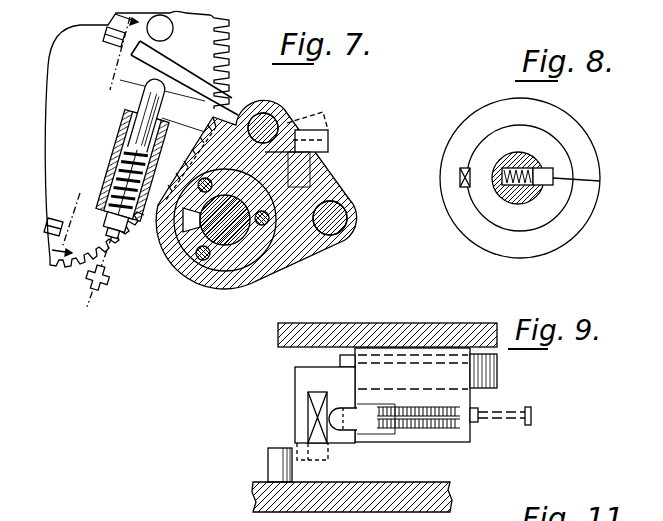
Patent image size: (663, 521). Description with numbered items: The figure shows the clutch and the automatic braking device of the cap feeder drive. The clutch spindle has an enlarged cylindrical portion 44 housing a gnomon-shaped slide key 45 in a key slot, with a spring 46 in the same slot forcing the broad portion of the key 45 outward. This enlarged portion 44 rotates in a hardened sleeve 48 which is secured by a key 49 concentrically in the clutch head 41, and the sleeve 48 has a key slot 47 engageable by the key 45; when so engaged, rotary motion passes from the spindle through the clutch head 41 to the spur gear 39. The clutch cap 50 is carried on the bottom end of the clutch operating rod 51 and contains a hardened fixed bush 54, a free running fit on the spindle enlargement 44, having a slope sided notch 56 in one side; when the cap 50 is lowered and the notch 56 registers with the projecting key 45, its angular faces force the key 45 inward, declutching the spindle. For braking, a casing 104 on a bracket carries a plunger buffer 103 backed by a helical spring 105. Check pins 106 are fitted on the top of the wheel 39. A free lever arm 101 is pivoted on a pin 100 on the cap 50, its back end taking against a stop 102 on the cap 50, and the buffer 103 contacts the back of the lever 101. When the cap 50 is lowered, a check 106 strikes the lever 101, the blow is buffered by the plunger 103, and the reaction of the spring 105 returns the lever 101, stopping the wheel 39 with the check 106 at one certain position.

In FIG. 7, the spur gear 39 is at (229, 46).
In FIG. 9, the spur gear 39 is at (400, 484).
In FIG. 8, the clutch head 41 is at (589, 161).
In FIG. 7, the enlarged cylindrical portion 44 is at (276, 248).
In FIG. 8, the enlarged cylindrical portion 44 is at (498, 198).
In FIG. 8, the slide key 45 is at (548, 168).
In FIG. 8, the spring 46 is at (504, 167).
In FIG. 8, the key slot 47 is at (588, 188).
In FIG. 8, the hardened sleeve 48 is at (518, 189).
In FIG. 8, the key 49 is at (460, 180).
In FIG. 7, the clutch cap 50 is at (336, 191).
In FIG. 9, the clutch cap 50 is at (498, 372).
In FIG. 7, the clutch operating rod 51 is at (350, 214).
In FIG. 7, the hardened fixed bush 54 is at (241, 263).
In FIG. 7, the slope sided notch 56 is at (166, 246).
In FIG. 7, the pin 100 is at (273, 115).
In FIG. 7, the free lever arm 101 is at (231, 108).
In FIG. 9, the free lever arm 101 is at (323, 418).
In FIG. 7, the stop 102 is at (311, 168).
In FIG. 9, the stop 102 is at (340, 397).
In FIG. 9, the plunger buffer 103 is at (342, 433).
In FIG. 9, the casing 104 is at (382, 395).
In FIG. 9, the helical spring 105 is at (440, 430).
In FIG. 7, the check pins 106 is at (173, 30).
In FIG. 9, the check pins 106 is at (273, 464).